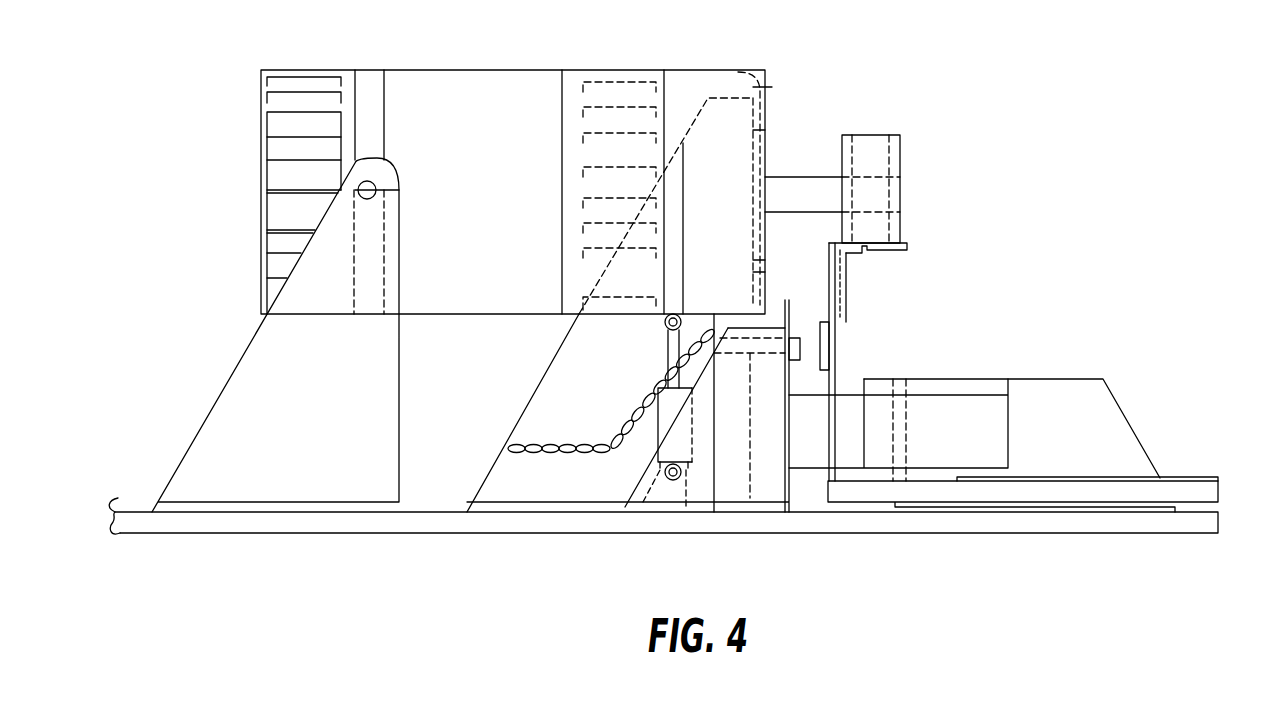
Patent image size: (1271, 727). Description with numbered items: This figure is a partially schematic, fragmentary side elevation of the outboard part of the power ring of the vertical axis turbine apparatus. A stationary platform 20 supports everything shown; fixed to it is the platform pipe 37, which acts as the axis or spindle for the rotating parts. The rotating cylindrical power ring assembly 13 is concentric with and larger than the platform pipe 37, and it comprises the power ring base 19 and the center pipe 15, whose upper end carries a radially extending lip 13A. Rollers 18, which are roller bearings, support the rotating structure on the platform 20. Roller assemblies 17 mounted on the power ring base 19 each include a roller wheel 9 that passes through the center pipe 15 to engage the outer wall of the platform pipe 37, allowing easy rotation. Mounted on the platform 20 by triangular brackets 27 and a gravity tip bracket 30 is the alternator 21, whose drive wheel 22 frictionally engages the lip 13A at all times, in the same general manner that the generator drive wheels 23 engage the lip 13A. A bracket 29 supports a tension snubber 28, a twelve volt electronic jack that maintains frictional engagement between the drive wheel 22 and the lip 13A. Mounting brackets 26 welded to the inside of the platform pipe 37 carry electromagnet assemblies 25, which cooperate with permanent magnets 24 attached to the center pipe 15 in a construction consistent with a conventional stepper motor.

The roller wheel 9 is at (970, 427).
The power ring assembly 13 is at (852, 282).
The lip 13A is at (908, 247).
The center pipe 15 is at (845, 358).
The roller assembly 17 is at (1089, 390).
The roller 18 is at (902, 510).
The power ring base 19 is at (1182, 477).
The stationary platform 20 is at (422, 518).
The alternator 21 is at (446, 167).
The drive wheel 22 is at (874, 143).
The drive wheel 23 is at (905, 188).
The permanent magnet 24 is at (837, 343).
The electromagnet assembly 25 is at (763, 333).
The mag pulse laser drive mounting bracket 26 is at (726, 485).
The alternator mounting bracket 27 is at (570, 361).
The tension snubber 28 is at (657, 412).
The bracket 29 is at (661, 494).
The gravity tip generator bracket 30 is at (250, 400).
The platform pipe 37 is at (780, 428).